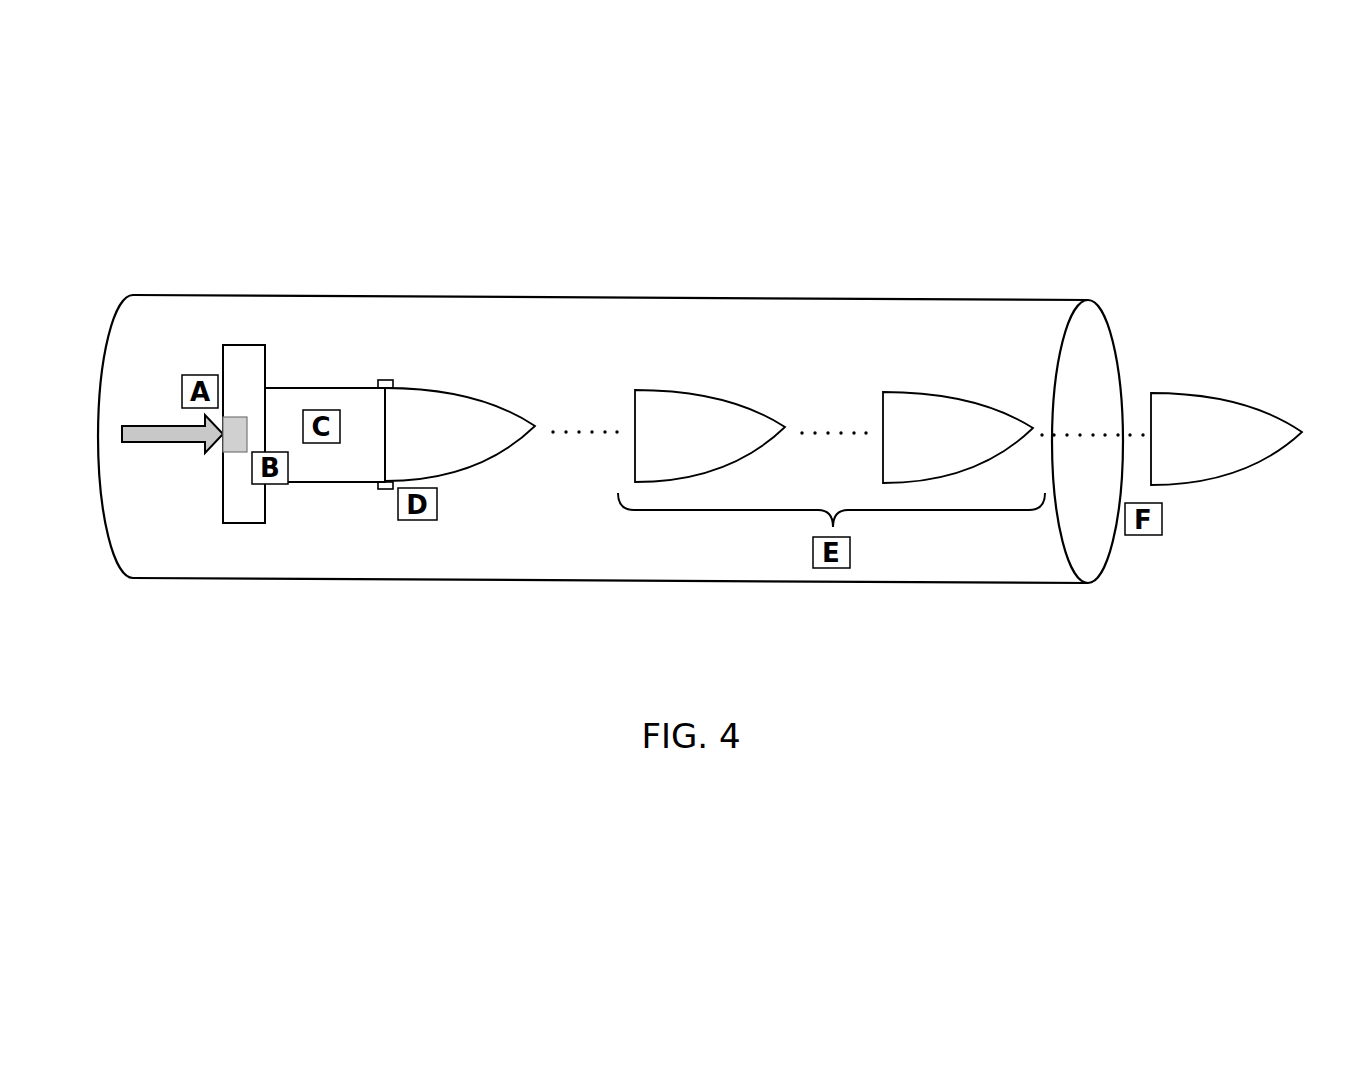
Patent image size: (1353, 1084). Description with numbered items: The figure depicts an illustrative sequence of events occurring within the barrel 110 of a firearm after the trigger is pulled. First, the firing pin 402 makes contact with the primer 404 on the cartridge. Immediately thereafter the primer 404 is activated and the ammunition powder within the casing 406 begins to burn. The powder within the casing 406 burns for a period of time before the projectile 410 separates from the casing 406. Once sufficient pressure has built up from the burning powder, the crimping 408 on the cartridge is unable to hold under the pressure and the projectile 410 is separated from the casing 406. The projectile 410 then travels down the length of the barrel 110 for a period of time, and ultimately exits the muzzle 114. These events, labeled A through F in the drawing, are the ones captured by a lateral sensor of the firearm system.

The barrel 110 is at (700, 297).
The muzzle 114 is at (1087, 330).
The firing pin 402 is at (184, 441).
The primer 404 is at (236, 441).
The casing 406 is at (288, 400).
The crimping 408 is at (387, 378).
The projectile 410 is at (490, 413).